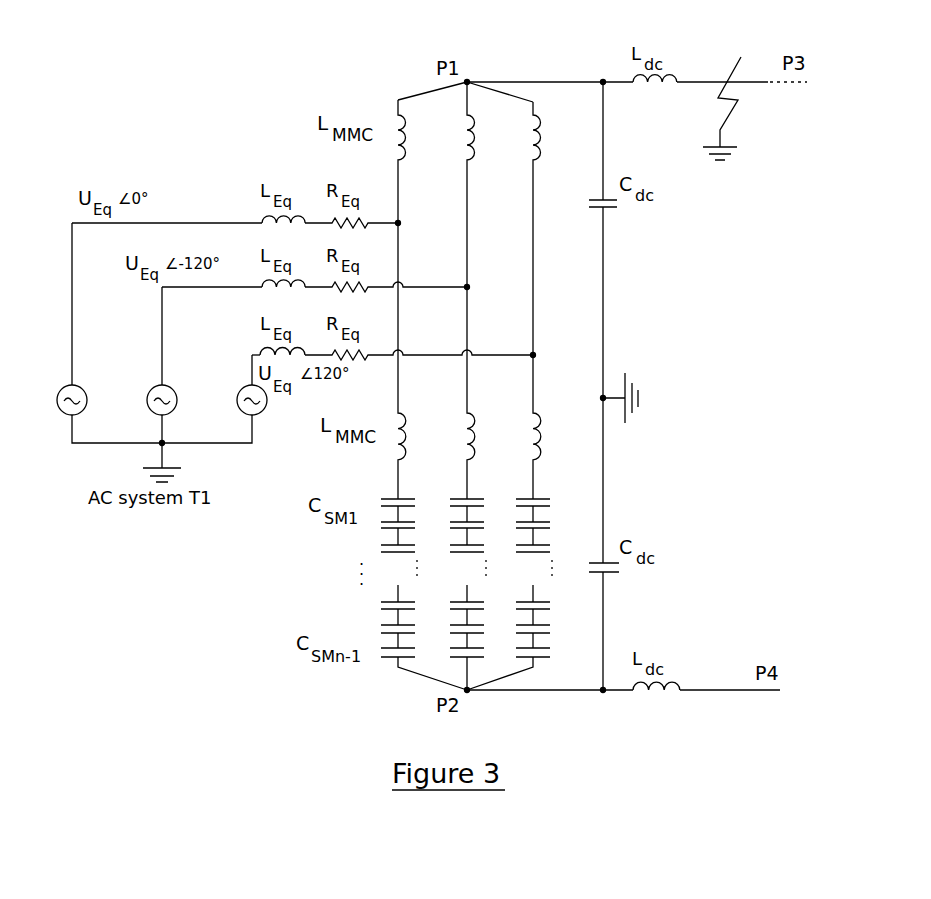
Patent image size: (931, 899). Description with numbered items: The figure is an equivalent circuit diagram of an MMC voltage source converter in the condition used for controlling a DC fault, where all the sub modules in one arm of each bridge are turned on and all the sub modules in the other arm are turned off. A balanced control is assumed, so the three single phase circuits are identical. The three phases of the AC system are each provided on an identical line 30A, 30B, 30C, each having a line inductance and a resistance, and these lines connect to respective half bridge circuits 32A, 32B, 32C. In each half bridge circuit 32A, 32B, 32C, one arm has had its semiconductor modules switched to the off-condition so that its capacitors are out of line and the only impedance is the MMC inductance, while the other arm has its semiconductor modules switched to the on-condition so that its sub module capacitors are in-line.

The line 30A is at (72, 223).
The line 30B is at (160, 347).
The line 30C is at (255, 425).
The half bridge circuit 32A is at (398, 100).
The half bridge circuit 32B is at (467, 172).
The half bridge circuit 32C is at (537, 268).